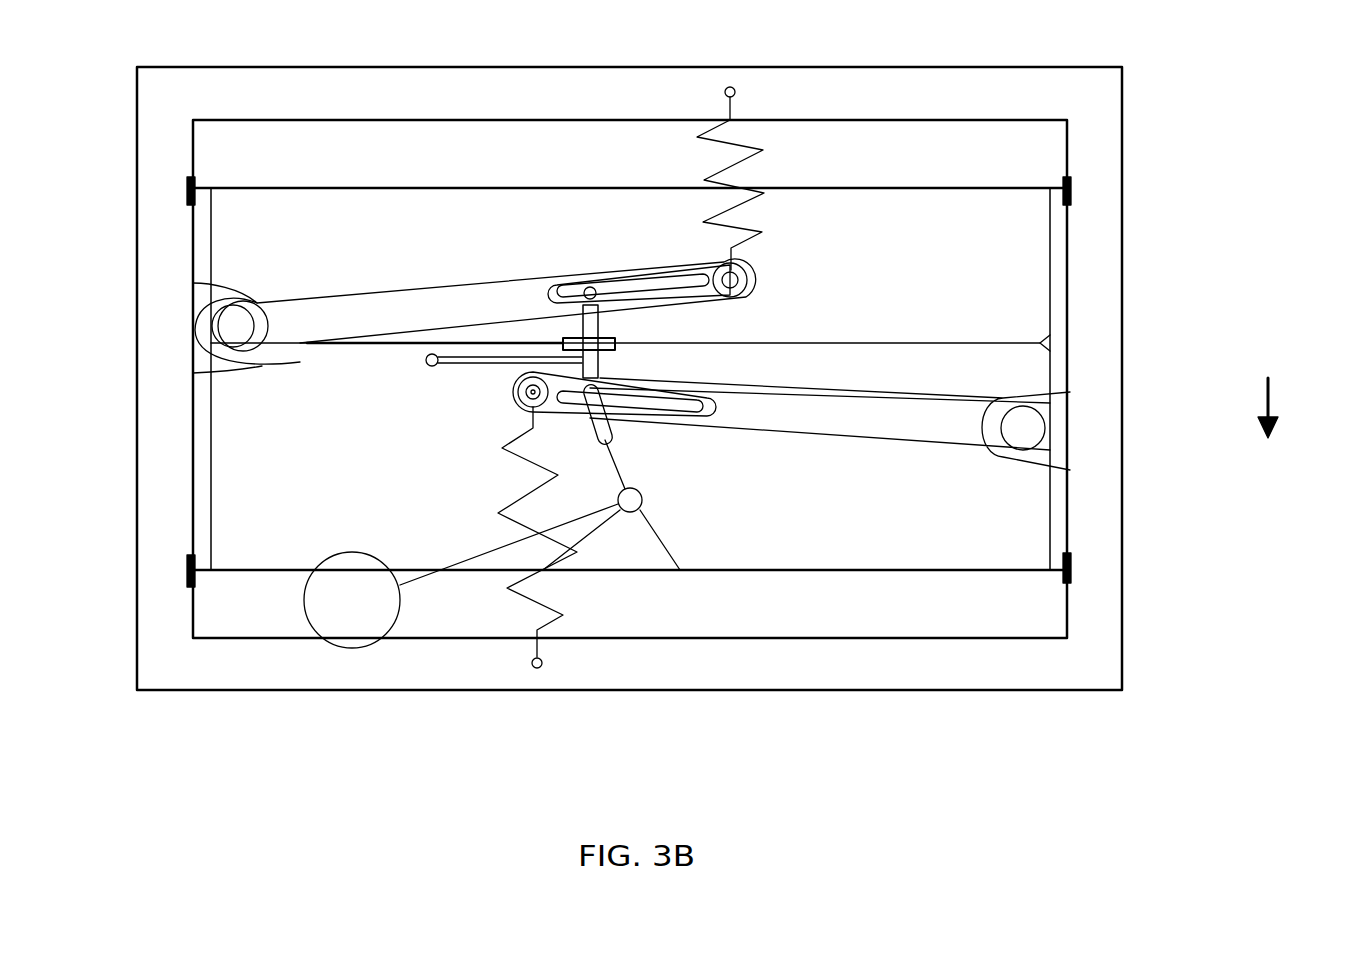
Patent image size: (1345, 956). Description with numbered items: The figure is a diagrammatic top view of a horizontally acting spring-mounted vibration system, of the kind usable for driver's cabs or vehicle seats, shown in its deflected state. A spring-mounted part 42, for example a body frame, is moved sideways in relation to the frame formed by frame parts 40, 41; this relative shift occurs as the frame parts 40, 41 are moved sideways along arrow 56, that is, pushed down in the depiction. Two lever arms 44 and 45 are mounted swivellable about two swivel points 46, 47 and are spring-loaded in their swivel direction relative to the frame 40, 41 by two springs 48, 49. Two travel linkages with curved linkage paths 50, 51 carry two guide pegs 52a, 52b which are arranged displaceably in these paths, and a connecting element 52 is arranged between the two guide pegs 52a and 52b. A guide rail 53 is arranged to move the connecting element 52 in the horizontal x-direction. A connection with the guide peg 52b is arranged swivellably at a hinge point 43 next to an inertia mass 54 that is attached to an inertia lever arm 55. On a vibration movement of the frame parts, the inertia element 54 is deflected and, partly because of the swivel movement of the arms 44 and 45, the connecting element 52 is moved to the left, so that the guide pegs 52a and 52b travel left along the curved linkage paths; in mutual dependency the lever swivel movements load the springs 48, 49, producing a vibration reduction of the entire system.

The frame part 40 is at (1107, 152).
The frame part 41 is at (1067, 248).
The spring-mounted part 42 is at (1050, 313).
The hinge point 43 is at (627, 552).
The lever arm 44 is at (458, 305).
The lever arm 45 is at (918, 418).
The swivel point 46 is at (228, 323).
The swivel point 47 is at (1018, 432).
The spring 48 is at (740, 168).
The spring 49 is at (540, 597).
The linkage path 50 is at (630, 292).
The linkage path 51 is at (657, 401).
The connecting element 52 is at (590, 368).
The guide peg 52a is at (590, 290).
The guide peg 52b is at (597, 400).
The guide rail 53 is at (466, 365).
The inertia mass 54 is at (347, 603).
The inertia lever arm 55 is at (463, 557).
The arrow 56 is at (1270, 400).